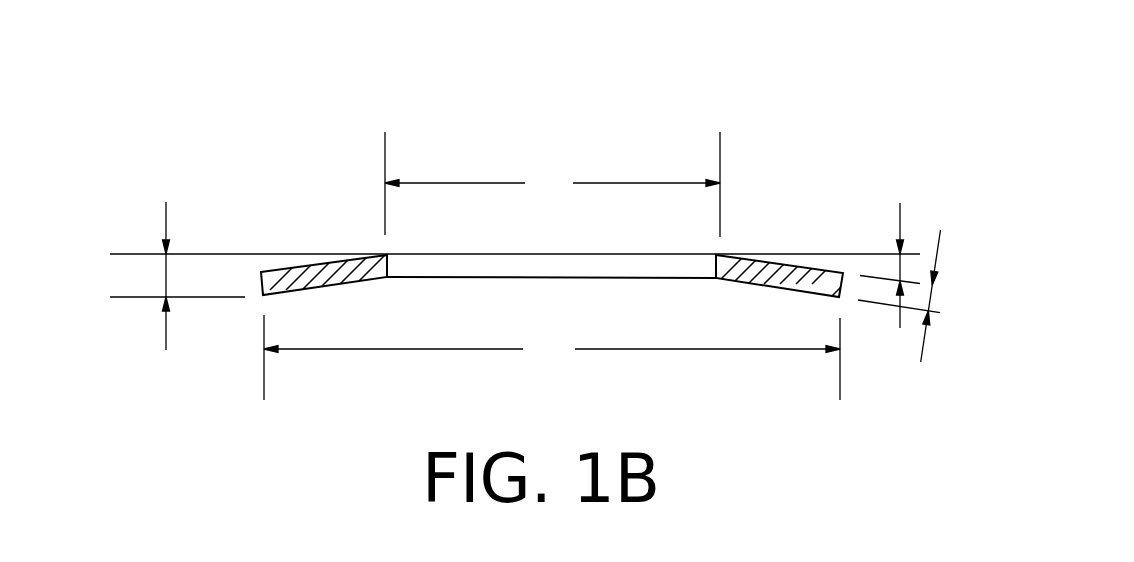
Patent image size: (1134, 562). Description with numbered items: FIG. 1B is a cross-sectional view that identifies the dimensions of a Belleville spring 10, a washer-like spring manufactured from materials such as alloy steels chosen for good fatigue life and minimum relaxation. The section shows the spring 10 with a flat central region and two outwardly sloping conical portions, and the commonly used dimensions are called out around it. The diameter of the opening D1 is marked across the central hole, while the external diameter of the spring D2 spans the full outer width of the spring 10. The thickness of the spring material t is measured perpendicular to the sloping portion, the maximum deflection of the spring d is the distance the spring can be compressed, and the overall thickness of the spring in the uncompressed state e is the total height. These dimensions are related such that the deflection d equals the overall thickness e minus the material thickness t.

The spring 10 is at (776, 225).
The diameter of the opening D1 is at (552, 184).
The external diameter of the spring D2 is at (552, 357).
The overall thickness of the spring in the uncompressed state e is at (177, 276).
The maximum deflection of the spring d is at (912, 255).
The thickness of the spring material t is at (907, 296).